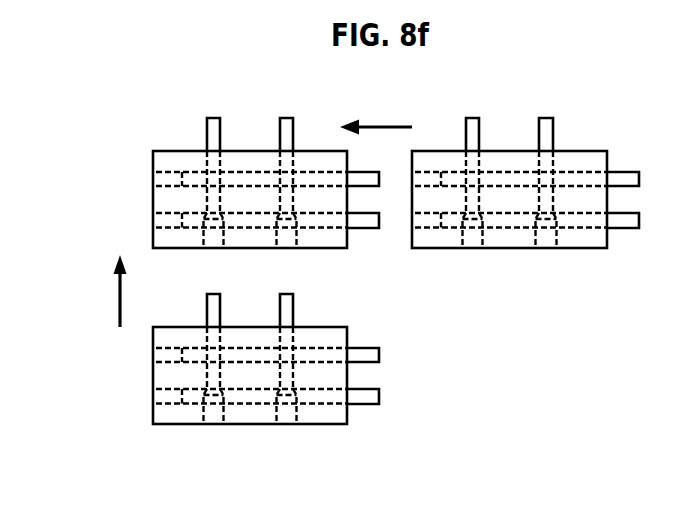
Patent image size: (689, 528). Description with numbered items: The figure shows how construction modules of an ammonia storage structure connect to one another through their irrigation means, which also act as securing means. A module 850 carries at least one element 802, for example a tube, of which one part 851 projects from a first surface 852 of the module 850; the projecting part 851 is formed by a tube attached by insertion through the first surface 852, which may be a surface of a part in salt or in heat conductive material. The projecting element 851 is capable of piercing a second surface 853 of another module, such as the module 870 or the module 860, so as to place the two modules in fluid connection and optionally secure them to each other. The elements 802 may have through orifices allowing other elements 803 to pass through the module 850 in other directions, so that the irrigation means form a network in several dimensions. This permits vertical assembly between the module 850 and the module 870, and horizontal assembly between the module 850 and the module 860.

The element 802 is at (288, 236).
The other element 803 is at (360, 182).
The module 850 is at (126, 199).
The projecting part 851 is at (213, 131).
The first surface 852 is at (251, 146).
The second surface 853 is at (212, 262).
The other module 860 is at (640, 152).
The module 870 is at (126, 375).